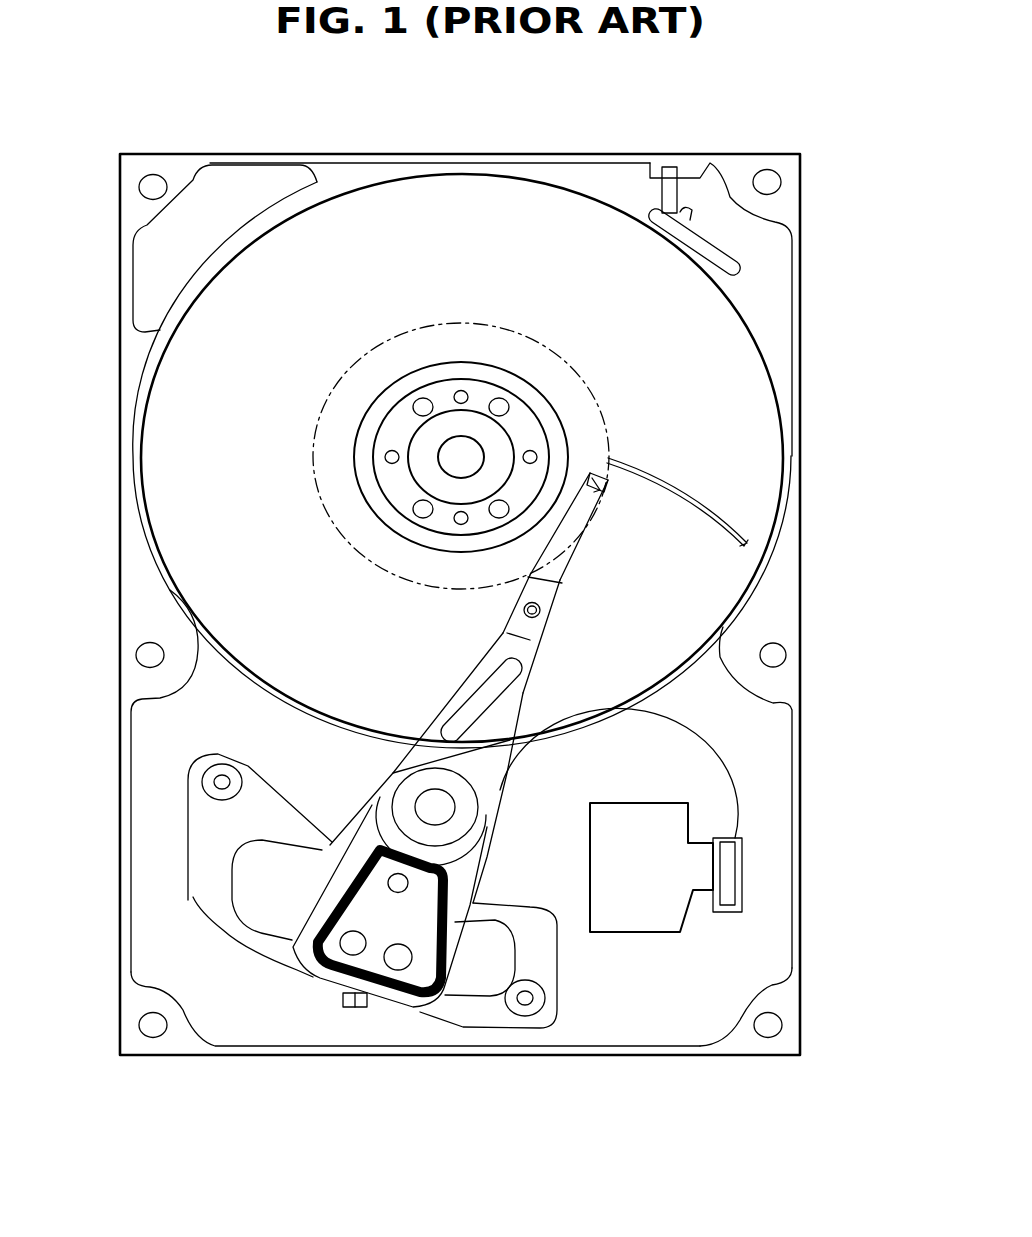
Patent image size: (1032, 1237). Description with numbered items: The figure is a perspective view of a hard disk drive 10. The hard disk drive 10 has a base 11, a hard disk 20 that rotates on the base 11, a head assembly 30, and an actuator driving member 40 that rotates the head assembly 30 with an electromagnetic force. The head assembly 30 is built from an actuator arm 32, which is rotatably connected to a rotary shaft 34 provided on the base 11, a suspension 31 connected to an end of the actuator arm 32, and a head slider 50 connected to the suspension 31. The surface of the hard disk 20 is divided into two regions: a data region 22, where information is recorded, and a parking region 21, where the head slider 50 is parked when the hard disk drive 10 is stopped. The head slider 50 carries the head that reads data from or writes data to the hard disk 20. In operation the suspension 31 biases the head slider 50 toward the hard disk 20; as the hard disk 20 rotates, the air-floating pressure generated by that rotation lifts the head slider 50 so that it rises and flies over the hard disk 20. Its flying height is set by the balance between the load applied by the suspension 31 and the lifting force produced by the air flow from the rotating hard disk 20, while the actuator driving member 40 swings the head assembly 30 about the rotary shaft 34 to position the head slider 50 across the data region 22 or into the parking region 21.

The hard disk drive 10 is at (824, 116).
The base 11 is at (778, 778).
The hard disk 20 is at (760, 338).
The parking region 21 is at (445, 457).
The data region 22 is at (353, 457).
The head assembly 30 is at (478, 740).
The suspension 31 is at (560, 577).
The actuator arm 32 is at (523, 687).
The rotary shaft 34 is at (430, 798).
The actuator driving member 40 is at (170, 815).
The head slider 50 is at (595, 490).